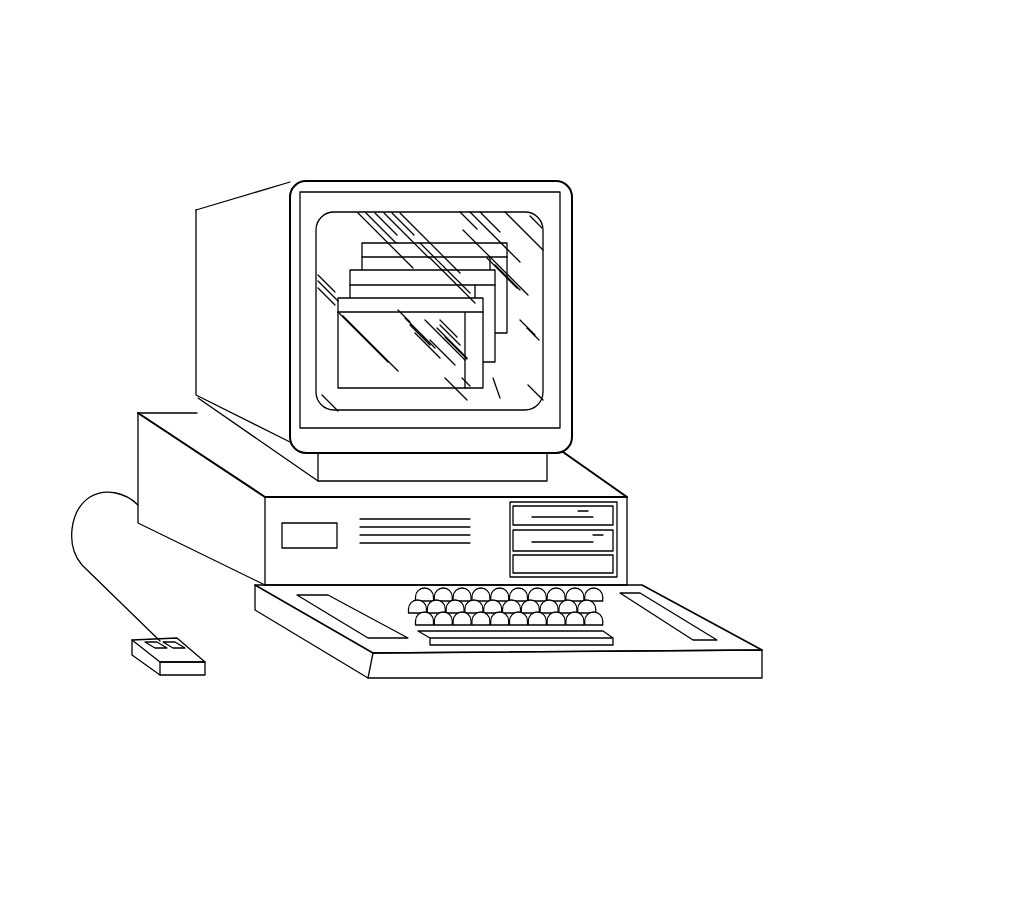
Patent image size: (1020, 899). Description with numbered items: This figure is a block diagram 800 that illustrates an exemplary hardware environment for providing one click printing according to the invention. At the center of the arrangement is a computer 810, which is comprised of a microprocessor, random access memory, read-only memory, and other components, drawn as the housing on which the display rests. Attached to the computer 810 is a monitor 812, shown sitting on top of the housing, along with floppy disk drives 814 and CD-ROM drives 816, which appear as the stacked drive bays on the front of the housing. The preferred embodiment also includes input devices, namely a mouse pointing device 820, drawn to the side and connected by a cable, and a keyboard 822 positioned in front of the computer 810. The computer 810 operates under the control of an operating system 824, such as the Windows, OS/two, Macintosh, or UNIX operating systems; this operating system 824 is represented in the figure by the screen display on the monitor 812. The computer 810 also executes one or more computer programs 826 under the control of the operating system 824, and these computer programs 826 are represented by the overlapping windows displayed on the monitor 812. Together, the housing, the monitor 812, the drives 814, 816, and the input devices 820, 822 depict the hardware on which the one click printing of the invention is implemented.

The block diagram 800 is at (608, 103).
The computer 810 is at (592, 470).
The monitor 812 is at (447, 180).
The floppy disk drives 814 is at (610, 514).
The CD-ROM drives 816 is at (607, 565).
The mouse pointing device 820 is at (131, 656).
The keyboard 822 is at (725, 672).
The operating system 824 is at (333, 222).
The computer programs 826 is at (512, 321).